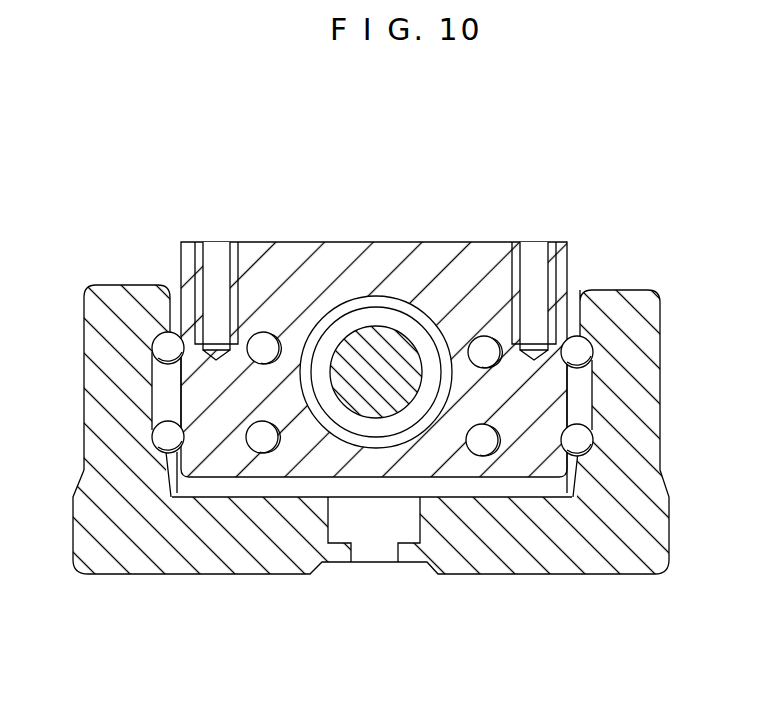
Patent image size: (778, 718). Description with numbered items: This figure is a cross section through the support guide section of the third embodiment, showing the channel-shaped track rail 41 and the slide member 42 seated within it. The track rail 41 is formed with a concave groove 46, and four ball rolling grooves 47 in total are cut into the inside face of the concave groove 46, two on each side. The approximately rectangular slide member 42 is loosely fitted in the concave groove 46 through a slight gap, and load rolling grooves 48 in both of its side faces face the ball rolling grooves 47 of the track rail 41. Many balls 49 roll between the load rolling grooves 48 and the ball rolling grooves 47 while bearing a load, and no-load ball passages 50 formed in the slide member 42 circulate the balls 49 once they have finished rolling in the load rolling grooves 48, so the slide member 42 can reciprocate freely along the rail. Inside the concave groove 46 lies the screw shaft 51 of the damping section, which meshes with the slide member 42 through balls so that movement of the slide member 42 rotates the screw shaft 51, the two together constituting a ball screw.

The 1st track rail 41 is at (496, 576).
The 1st slide member 42 is at (378, 256).
The concave groove 46 is at (522, 487).
The ball rolling groove 47 is at (157, 336).
The load rolling groove 48 is at (155, 358).
The ball 49 is at (590, 340).
The no-load ball passage 50 is at (266, 334).
The screw shaft 51 is at (373, 414).